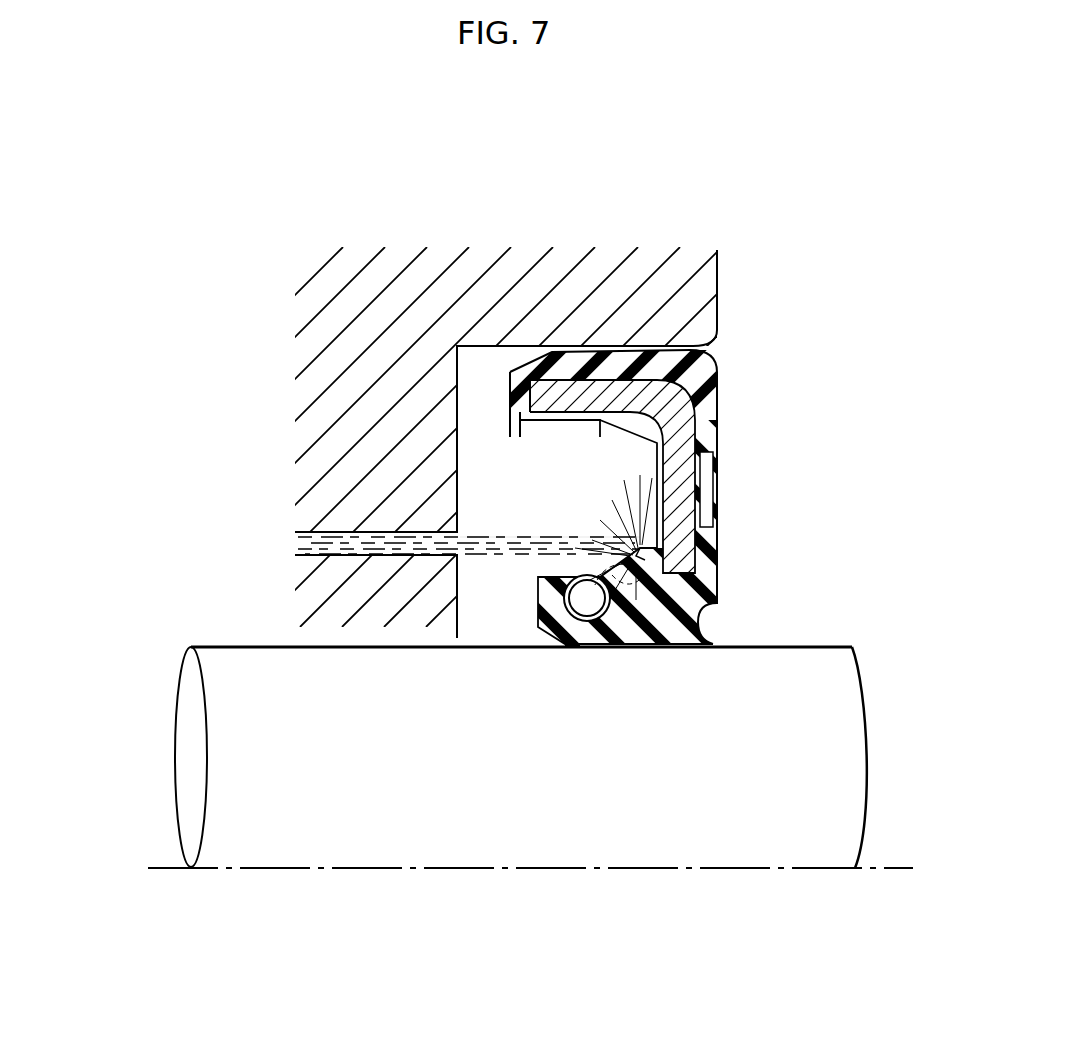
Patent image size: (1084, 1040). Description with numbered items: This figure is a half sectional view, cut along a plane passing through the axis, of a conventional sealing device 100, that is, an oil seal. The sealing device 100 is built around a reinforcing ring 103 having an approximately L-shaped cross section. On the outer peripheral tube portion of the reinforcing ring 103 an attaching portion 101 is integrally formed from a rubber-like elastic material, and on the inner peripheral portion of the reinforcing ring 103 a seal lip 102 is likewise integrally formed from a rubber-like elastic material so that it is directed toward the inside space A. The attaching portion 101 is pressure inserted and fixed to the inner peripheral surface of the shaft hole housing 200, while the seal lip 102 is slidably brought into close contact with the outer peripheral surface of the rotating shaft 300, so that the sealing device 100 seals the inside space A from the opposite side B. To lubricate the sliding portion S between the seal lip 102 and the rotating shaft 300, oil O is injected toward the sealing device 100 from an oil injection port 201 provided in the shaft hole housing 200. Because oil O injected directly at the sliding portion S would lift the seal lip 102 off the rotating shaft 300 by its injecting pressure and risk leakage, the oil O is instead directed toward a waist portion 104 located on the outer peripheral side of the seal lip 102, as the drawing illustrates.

The sealing device 100 is at (630, 455).
The attaching portion 101 is at (632, 346).
The seal lip 102 is at (556, 630).
The reinforcing ring 103 is at (704, 372).
The waist portion 104 is at (638, 548).
The shaft hole housing 200 is at (420, 243).
The oil injection port 201 is at (458, 533).
The rotating shaft 300 is at (182, 722).
The inside space A is at (226, 638).
The sealed fluid side B is at (935, 545).
The sliding portion S is at (572, 660).
The oil O is at (497, 557).